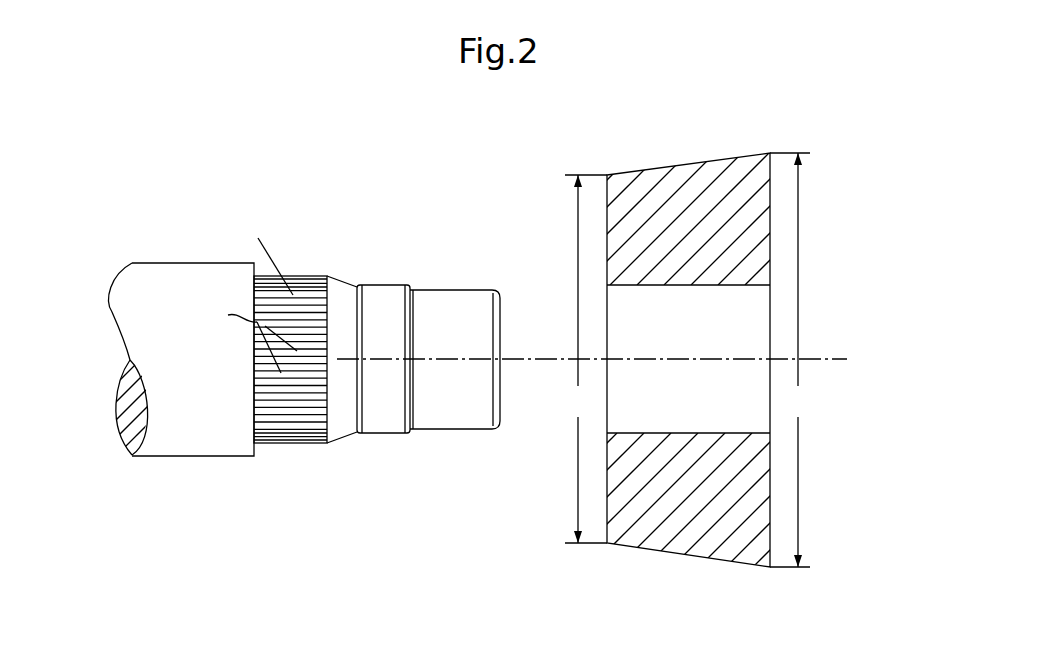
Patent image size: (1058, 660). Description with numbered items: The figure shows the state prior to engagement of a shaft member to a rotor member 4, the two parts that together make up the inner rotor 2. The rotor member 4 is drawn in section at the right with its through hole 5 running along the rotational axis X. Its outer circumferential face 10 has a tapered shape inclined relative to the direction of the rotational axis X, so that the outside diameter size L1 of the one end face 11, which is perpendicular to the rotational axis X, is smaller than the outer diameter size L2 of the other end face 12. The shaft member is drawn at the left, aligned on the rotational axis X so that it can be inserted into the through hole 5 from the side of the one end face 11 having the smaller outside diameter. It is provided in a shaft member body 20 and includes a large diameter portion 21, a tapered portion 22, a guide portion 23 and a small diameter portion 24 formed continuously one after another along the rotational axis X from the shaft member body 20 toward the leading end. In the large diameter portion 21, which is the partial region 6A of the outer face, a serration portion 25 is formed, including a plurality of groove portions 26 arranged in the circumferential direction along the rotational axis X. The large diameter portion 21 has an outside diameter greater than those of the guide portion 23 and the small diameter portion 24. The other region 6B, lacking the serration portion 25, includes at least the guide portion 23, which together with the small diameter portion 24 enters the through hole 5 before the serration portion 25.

The inner rotor 2 is at (748, 338).
The rotor member 4 is at (731, 156).
The through hole 5 is at (628, 284).
The partial region 6A is at (305, 266).
The other region 6B is at (371, 277).
The outer circumferential face 10 is at (662, 160).
The one end face 11 is at (607, 503).
The other end face 12 is at (770, 490).
The shaft member body 20 is at (186, 456).
The large diameter portion 21 is at (284, 443).
The tapered portion 22 is at (337, 438).
The guide portion 23 is at (388, 434).
The small diameter portion 24 is at (438, 430).
The serration portion 25 is at (256, 256).
The groove portions 26 is at (245, 337).
The rotational axis X is at (601, 362).
The outside diameter size L1 is at (584, 359).
The outer diameter size L2 is at (793, 360).